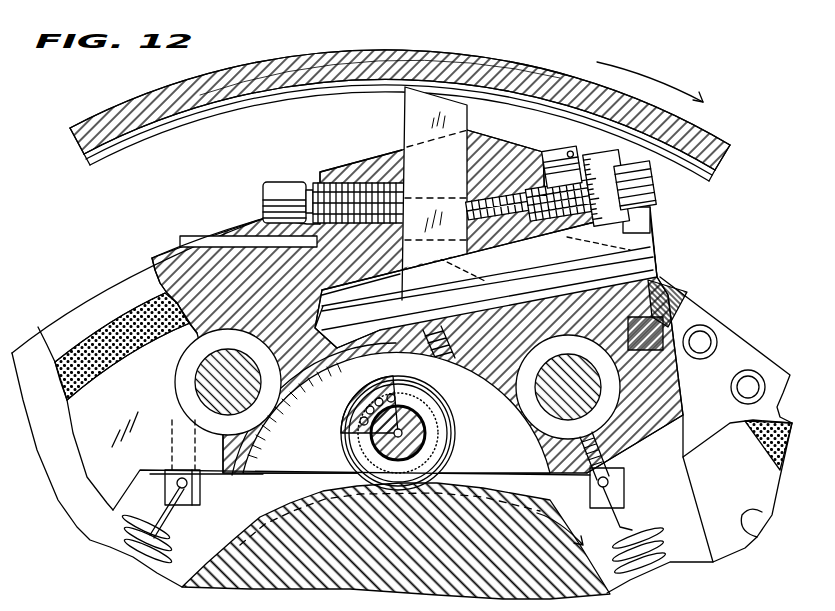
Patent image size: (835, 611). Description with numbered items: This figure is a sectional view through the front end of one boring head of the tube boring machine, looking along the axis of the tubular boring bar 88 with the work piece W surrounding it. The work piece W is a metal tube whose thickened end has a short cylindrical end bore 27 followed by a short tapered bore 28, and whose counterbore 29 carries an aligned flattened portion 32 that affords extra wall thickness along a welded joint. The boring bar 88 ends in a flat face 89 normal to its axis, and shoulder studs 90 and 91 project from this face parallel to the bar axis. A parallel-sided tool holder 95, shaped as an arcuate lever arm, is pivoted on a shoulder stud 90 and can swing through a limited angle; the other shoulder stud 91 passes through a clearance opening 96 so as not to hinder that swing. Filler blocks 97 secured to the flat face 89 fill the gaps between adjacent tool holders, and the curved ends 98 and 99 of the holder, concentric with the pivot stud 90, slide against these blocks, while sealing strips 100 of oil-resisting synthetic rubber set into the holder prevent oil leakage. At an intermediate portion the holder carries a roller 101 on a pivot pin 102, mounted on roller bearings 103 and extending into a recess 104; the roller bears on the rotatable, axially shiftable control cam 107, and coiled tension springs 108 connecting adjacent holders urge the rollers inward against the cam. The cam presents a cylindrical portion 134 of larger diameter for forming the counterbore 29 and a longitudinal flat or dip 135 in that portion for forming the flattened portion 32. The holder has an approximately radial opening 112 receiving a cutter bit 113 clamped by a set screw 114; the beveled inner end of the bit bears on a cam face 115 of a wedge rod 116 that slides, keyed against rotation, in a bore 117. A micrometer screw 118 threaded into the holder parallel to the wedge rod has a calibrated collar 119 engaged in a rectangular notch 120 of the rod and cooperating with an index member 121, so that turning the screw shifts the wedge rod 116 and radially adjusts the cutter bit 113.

The cylindrical end bore 27 is at (131, 148).
The tapered bore 28 is at (157, 130).
The counterbore 29 is at (187, 112).
The flattened portion 32 is at (333, 84).
The tubular boring bar 88 is at (60, 478).
The flat face 89 is at (33, 347).
The shoulder stud 90 is at (757, 532).
The shoulder stud 91 is at (207, 387).
The tool holder 95 is at (128, 280).
The clearance opening 96 is at (180, 361).
The filler block 97 is at (750, 348).
The curved end 98 is at (728, 432).
The curved end 99 is at (688, 284).
The sealing strip 100 is at (103, 337).
The roller 101 is at (422, 436).
The pivot pin 102 is at (430, 442).
The roller bearings 103 is at (352, 426).
The recess 104 is at (275, 471).
The control cam 107 is at (242, 535).
The coiled tension spring 108 is at (125, 548).
The opening 112 is at (402, 166).
The cutter bit 113 is at (412, 110).
The set screw 114 is at (284, 188).
The cam face 115 is at (392, 301).
The wedge rod 116 is at (652, 246).
The bore 117 is at (396, 412).
The micrometer screw 118 is at (655, 186).
The calibrated collar 119 is at (603, 165).
The rectangular notch 120 is at (652, 222).
The index member 121 is at (562, 149).
The cylindrical portion 134 is at (522, 502).
The flat or dip 135 is at (437, 485).
The work piece W is at (560, 72).